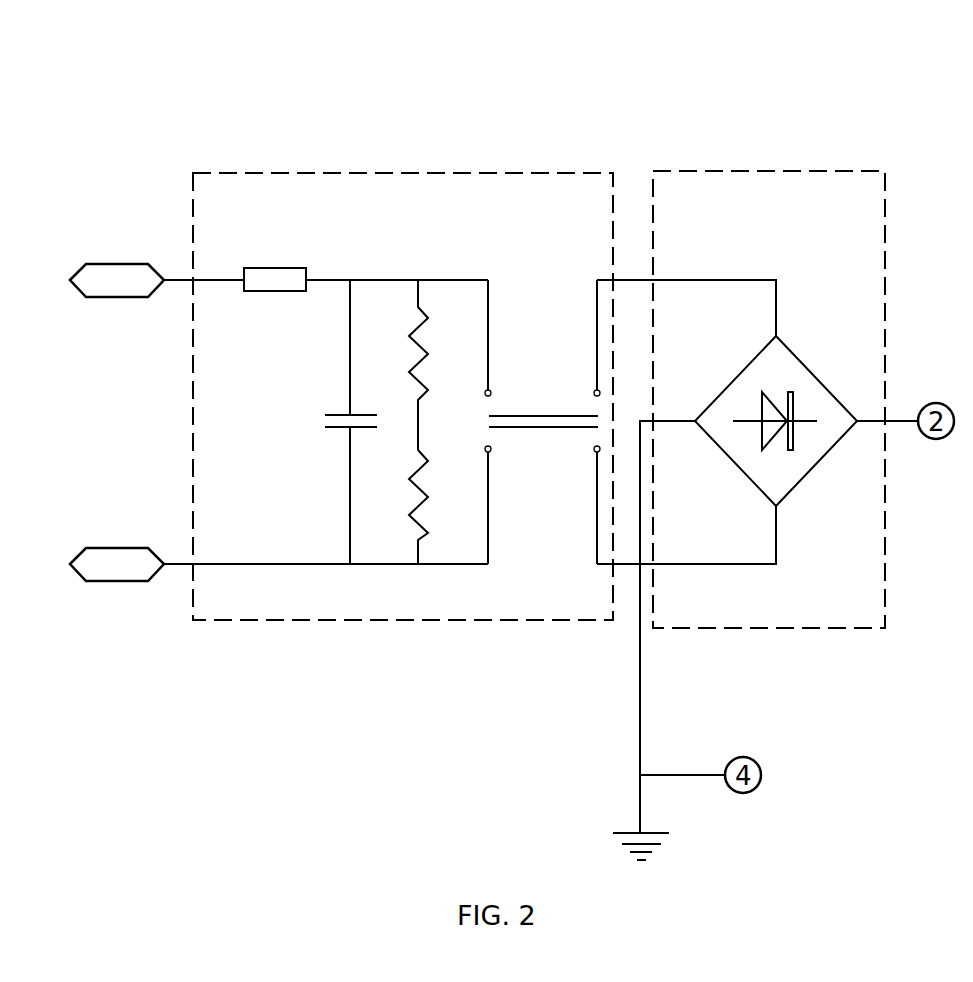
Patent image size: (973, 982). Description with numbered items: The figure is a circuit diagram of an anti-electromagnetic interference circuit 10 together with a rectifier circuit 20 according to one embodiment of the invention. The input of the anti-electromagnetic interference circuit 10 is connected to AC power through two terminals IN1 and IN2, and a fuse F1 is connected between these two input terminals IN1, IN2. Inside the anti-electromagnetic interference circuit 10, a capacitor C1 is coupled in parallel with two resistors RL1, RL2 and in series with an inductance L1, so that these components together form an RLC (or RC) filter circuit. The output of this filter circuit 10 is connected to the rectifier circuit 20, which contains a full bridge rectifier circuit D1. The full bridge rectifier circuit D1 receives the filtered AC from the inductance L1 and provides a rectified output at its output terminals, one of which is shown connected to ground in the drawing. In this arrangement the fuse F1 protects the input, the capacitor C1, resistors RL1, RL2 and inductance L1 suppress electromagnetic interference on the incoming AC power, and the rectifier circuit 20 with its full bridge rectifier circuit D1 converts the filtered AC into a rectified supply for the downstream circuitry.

The anti-electromagnetic interference circuit 10 is at (405, 173).
The rectifier circuit 20 is at (712, 170).
The input terminal IN1 is at (117, 281).
The input terminal IN2 is at (117, 565).
The fuse F1 is at (275, 258).
The capacitor C1 is at (321, 422).
The resistor RL1 is at (444, 365).
The resistor RL2 is at (444, 507).
The inductance L1 is at (542, 422).
The full bridge rectifier circuit D1 is at (757, 424).